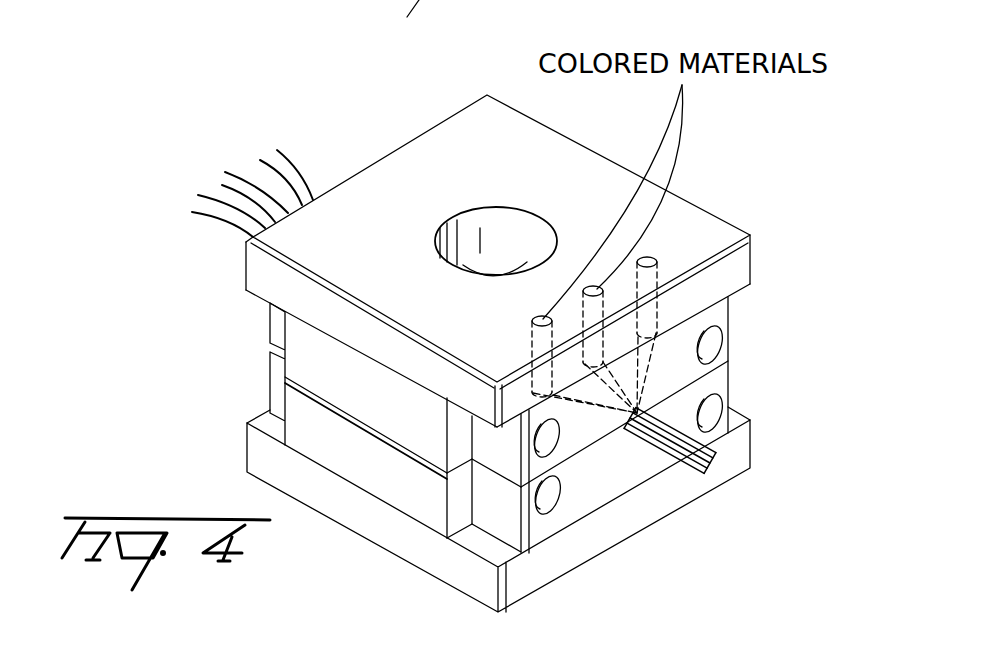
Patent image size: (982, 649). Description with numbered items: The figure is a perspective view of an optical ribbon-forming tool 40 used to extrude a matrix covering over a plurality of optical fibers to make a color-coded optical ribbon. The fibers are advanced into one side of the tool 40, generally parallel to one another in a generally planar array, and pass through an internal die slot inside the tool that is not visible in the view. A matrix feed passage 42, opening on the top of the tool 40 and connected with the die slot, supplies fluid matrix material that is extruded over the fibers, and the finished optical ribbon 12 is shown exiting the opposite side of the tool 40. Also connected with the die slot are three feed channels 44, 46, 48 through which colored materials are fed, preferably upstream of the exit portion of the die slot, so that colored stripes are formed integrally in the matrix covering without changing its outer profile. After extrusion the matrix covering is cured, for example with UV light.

The optical ribbon 12 is at (714, 464).
The optical ribbon-forming tool 40 is at (293, 236).
The matrix feed passage 42 is at (497, 243).
The feed channel 44 is at (657, 262).
The feed channel 46 is at (604, 298).
The feed channel 48 is at (532, 317).